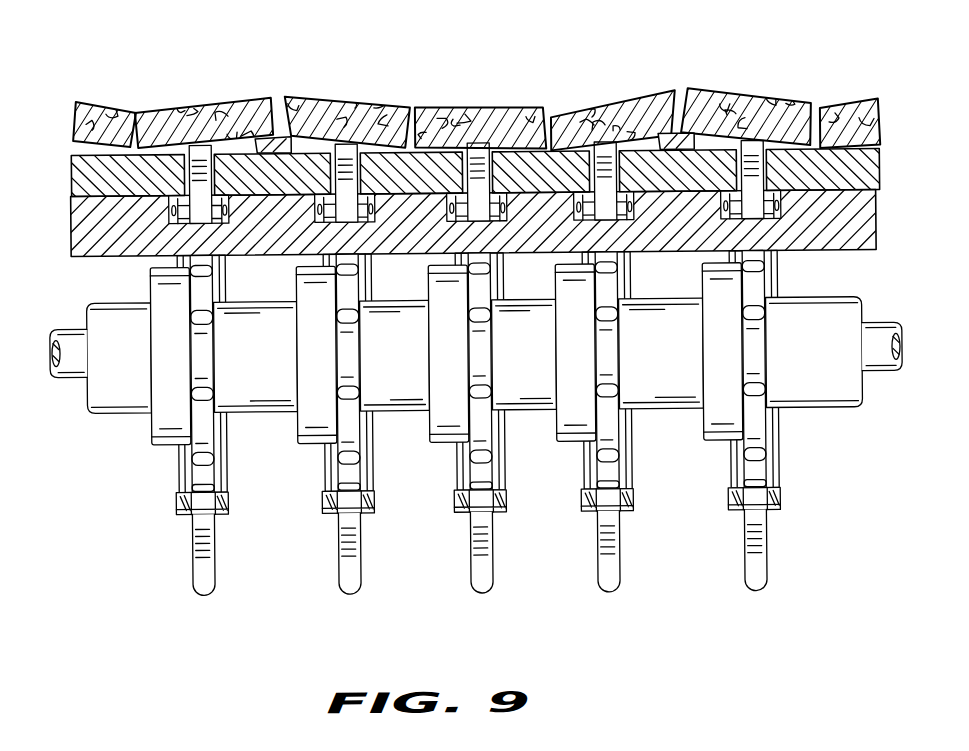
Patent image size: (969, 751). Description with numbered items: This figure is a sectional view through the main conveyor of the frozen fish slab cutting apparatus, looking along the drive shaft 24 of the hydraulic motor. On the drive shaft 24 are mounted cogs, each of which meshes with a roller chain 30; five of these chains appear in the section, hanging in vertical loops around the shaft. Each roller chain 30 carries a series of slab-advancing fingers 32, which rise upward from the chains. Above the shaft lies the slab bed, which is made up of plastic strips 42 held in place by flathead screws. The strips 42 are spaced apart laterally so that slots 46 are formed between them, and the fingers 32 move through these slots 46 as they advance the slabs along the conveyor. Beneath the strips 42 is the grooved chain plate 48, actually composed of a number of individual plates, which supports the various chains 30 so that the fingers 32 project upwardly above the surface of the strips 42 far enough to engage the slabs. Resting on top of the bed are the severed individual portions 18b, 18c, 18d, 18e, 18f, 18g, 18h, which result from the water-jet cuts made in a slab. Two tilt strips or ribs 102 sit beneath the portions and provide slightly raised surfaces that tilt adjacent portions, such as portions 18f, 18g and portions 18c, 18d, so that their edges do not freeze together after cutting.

The individual portion 18b is at (850, 103).
The individual portion 18c is at (740, 92).
The individual portion 18d is at (623, 101).
The individual portion 18e is at (502, 103).
The individual portion 18f is at (367, 102).
The individual portion 18g is at (228, 96).
The individual portion 18h is at (105, 100).
The drive shaft 24 is at (70, 375).
The roller chain 30 is at (145, 253).
The slab-advancing finger 32 is at (213, 170).
The plastic strip 42 is at (93, 175).
The slot 46 is at (378, 198).
The grooved chain plate 48 is at (845, 238).
The tilt strip 102 is at (288, 146).